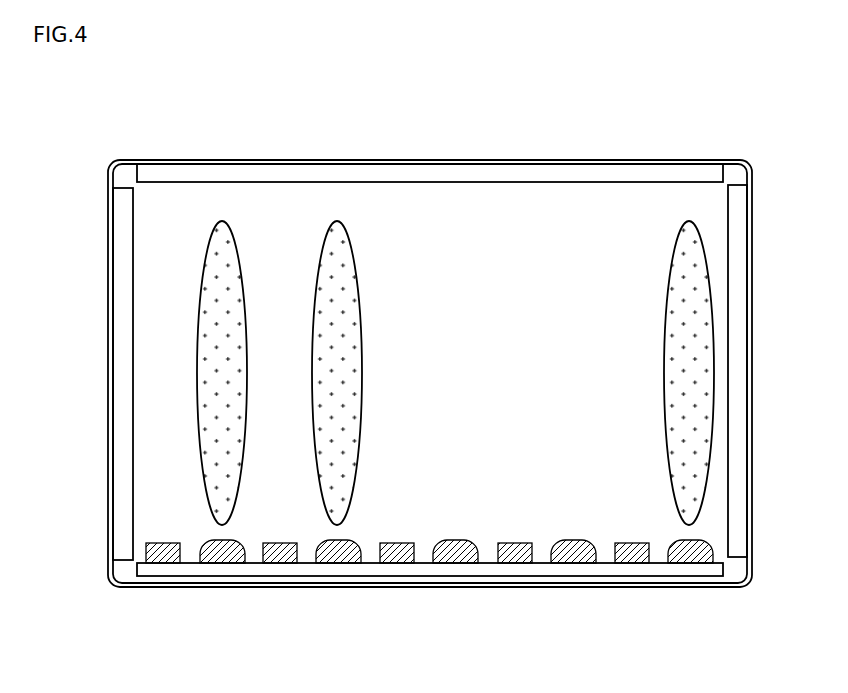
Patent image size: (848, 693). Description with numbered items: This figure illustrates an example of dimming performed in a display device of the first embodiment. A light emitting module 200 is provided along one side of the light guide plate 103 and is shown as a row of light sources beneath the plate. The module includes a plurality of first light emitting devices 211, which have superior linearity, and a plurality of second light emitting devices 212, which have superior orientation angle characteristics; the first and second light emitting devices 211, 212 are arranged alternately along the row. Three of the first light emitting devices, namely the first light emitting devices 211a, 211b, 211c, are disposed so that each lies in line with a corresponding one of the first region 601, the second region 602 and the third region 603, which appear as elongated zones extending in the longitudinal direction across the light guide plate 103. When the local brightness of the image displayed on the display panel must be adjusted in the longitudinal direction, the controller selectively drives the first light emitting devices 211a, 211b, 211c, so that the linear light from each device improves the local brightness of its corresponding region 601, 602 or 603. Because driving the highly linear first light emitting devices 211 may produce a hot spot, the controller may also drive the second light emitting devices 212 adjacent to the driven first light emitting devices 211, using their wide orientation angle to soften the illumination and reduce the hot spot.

The light guide plate 103 is at (143, 337).
The light emitting module 200 is at (727, 572).
The first light emitting devices 211 is at (455, 563).
The first light emitting device 211a is at (228, 564).
The first light emitting device 211b is at (345, 564).
The first light emitting device 211c is at (697, 564).
The second light emitting devices 212 is at (282, 564).
The first region 601 is at (222, 222).
The second region 602 is at (337, 222).
The third region 603 is at (689, 222).